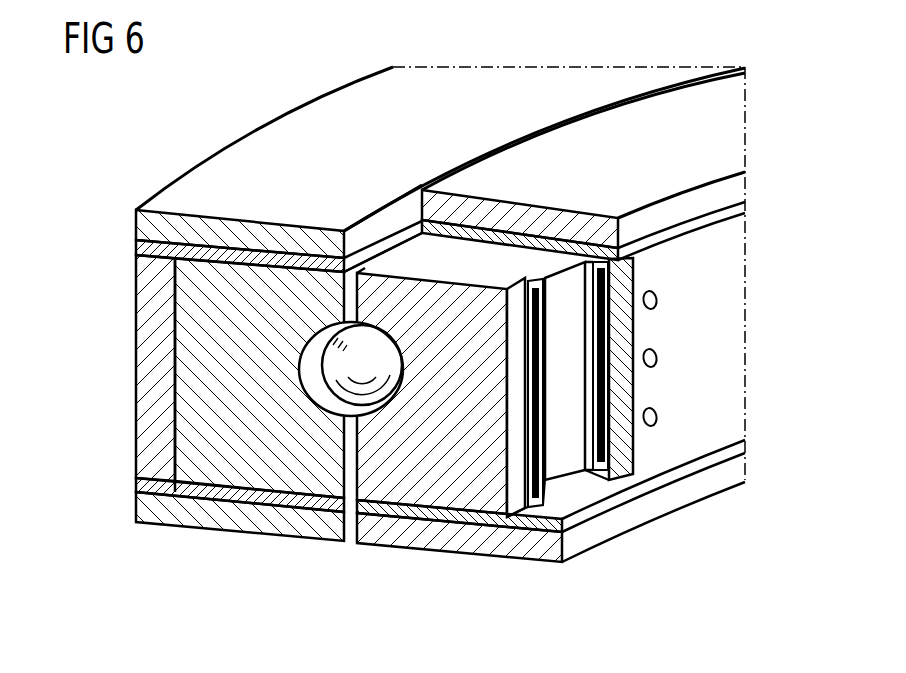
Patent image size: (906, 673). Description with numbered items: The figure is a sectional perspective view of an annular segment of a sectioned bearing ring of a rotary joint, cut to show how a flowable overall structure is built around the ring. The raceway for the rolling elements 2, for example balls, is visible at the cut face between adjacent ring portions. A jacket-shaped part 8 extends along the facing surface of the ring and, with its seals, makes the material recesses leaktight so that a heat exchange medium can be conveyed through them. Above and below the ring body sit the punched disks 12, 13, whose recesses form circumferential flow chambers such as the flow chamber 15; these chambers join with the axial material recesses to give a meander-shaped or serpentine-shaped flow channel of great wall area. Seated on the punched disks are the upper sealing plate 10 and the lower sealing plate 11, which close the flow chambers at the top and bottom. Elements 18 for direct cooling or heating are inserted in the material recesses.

The rolling elements 2 is at (332, 367).
The jacket-shaped part 8 is at (147, 360).
The upper sealing plate 10 is at (158, 225).
The lower sealing plate 11 is at (462, 542).
The punched disk 12 is at (148, 247).
The punched disk 13 is at (538, 527).
The flow chamber 15 is at (510, 530).
The elements for direct cooling or heating 18 is at (537, 447).